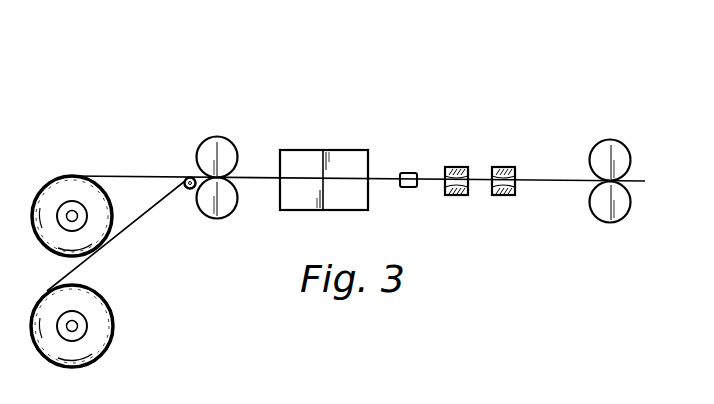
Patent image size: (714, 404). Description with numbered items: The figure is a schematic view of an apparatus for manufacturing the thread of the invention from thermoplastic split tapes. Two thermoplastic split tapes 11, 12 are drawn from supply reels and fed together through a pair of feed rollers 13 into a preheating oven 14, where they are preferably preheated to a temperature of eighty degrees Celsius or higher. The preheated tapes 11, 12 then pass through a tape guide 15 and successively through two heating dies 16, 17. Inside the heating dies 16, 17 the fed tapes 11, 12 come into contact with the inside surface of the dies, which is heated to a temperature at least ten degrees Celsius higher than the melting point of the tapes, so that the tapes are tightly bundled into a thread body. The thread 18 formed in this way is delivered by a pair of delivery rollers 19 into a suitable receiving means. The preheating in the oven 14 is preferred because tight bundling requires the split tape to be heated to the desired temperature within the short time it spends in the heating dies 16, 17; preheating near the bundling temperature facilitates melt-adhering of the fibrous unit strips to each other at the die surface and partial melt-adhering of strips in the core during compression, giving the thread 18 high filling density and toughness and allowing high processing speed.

The thermoplastic split tape 11 is at (75, 175).
The thermoplastic split tape 12 is at (92, 345).
The feed rollers 13 is at (220, 137).
The preheating oven 14 is at (332, 150).
The tape guide 15 is at (411, 173).
The heating die 16 is at (456, 167).
The heating die 17 is at (503, 167).
The thread 18 is at (560, 180).
The delivery rollers 19 is at (607, 140).